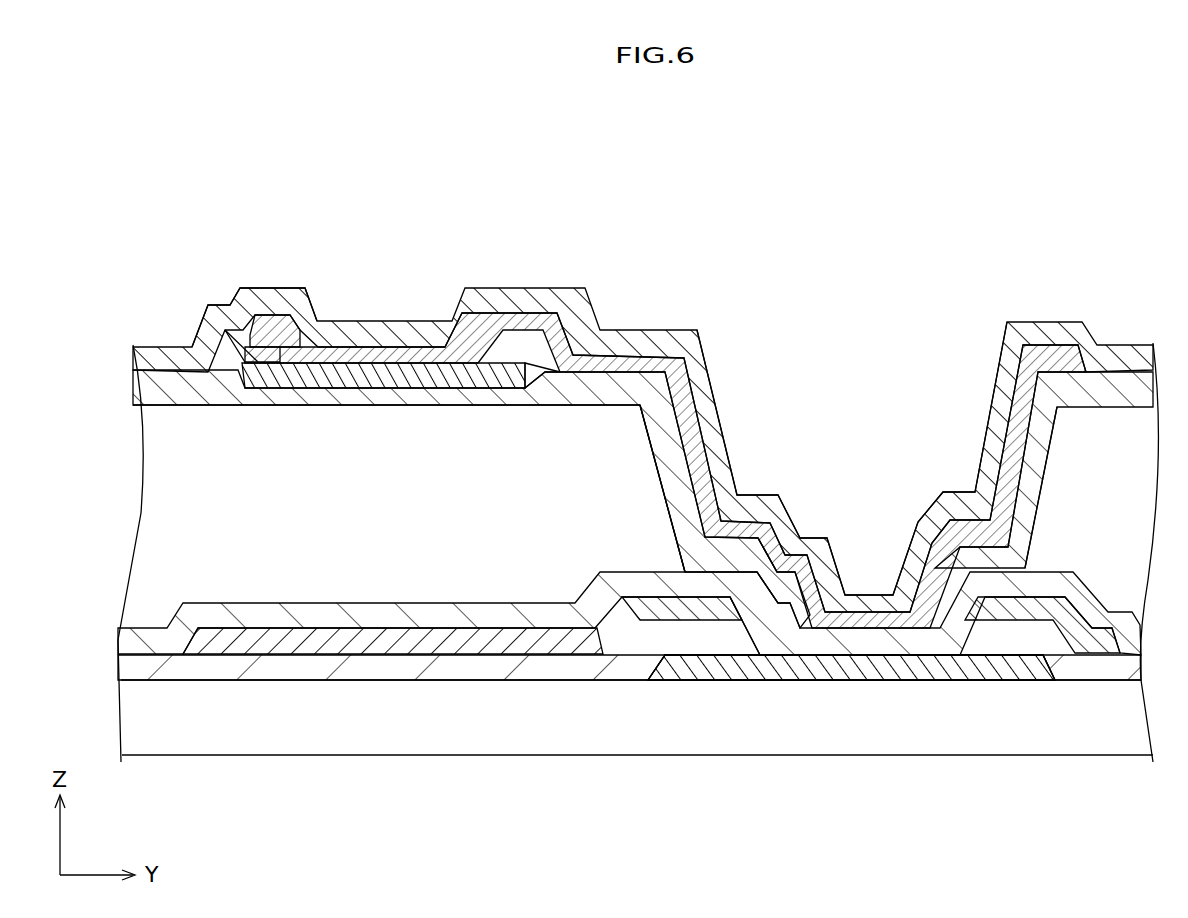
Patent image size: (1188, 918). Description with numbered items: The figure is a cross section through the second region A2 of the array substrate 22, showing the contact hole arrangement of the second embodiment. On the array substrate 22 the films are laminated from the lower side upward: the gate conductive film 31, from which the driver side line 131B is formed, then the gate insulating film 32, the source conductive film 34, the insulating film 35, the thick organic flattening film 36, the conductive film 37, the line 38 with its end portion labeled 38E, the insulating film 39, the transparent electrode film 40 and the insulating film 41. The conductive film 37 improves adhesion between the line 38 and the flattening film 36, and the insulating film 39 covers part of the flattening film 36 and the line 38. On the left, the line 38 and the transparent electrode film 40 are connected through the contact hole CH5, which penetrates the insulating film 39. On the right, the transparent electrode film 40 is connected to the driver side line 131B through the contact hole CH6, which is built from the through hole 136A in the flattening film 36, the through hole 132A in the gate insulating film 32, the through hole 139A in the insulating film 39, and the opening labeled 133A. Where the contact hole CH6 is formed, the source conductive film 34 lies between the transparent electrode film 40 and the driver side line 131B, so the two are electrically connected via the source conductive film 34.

The array substrate 22 is at (234, 757).
The gate insulating film 32 is at (130, 668).
The source conductive film 34 is at (404, 650).
The insulating film 35 is at (130, 640).
The flattening film 36 is at (157, 520).
The conductive film 37 is at (395, 347).
The line 38 is at (365, 363).
The semiconductor film end portion 38E is at (438, 322).
The insulating film 39 is at (172, 398).
The transparent electrode film 40 is at (268, 312).
The insulating film 41 is at (163, 352).
The contact hole CH5 is at (326, 330).
The contact hole CH6 is at (968, 815).
The through hole 136A is at (670, 507).
The through hole 132A is at (748, 565).
The through hole 139A is at (820, 548).
The opening in insulating film 133A is at (885, 598).
The driver side line 131B is at (1030, 683).
The gate conductive film 31 is at (870, 759).
The second region A2 is at (212, 192).